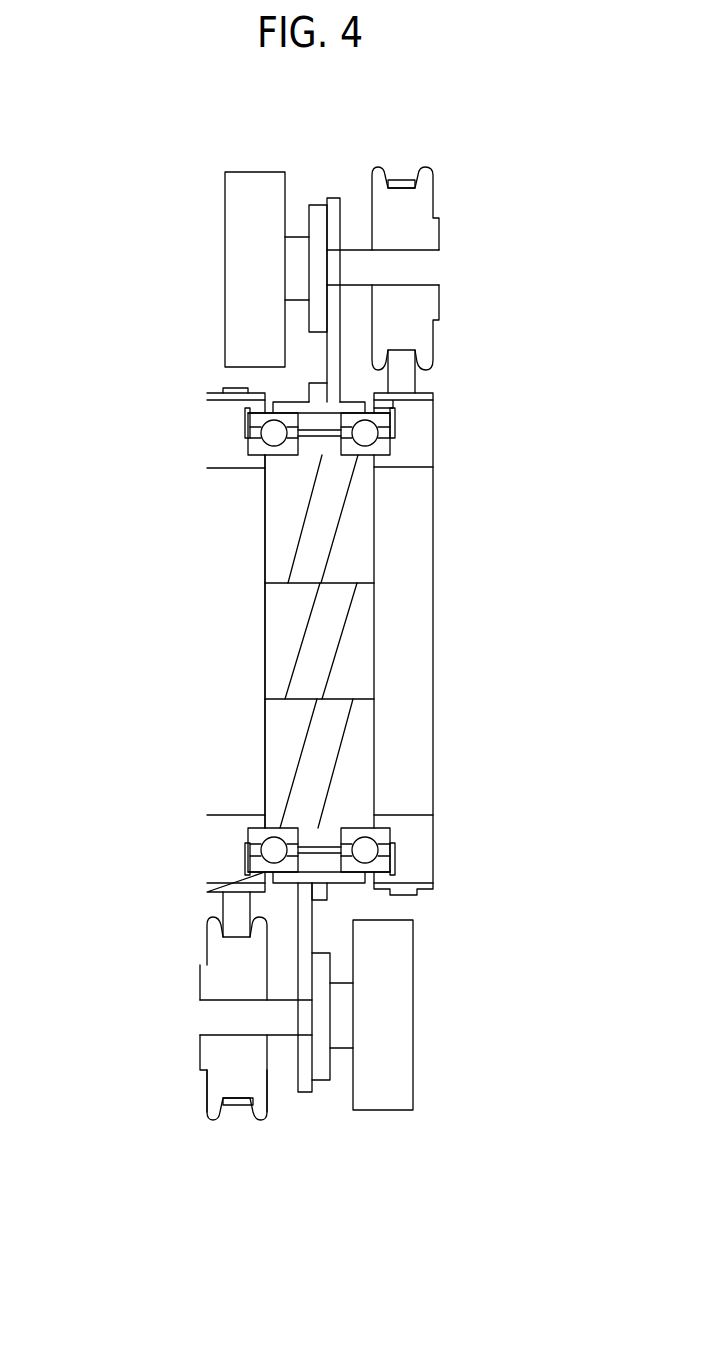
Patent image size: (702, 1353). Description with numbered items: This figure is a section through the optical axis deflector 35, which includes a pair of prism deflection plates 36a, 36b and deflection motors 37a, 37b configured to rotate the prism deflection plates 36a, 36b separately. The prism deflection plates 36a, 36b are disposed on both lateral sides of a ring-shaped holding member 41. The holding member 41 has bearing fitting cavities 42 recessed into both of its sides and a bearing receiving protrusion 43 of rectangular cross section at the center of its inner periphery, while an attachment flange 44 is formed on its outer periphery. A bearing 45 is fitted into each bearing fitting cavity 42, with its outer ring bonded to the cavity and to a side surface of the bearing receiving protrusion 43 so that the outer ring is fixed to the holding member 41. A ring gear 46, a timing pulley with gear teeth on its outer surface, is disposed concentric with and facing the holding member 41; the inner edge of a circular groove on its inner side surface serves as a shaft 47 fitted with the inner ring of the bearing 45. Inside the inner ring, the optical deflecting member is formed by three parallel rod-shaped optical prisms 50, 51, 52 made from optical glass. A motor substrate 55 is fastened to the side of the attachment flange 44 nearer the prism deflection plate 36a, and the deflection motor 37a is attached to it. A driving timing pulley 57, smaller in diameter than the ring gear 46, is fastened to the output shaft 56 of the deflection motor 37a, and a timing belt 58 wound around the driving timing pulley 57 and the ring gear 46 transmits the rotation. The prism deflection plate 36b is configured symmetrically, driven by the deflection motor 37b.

The optical axis deflector 35 is at (200, 346).
The prism deflection plate 36a is at (203, 412).
The prism deflection plate 36b is at (440, 408).
The deflection motor 37a is at (383, 1110).
The deflection motor 37b is at (258, 168).
The holding member 41 is at (327, 862).
The bearing fitting cavity 42 is at (348, 887).
The bearing receiving protrusion 43 is at (323, 853).
The attachment flange 44 is at (317, 900).
The bearing 45 is at (250, 447).
The ring gear 46 is at (207, 845).
The shaft 47 is at (265, 822).
The optical prism 50 is at (306, 522).
The optical prism 51 is at (312, 621).
The optical prism 52 is at (308, 735).
The motor substrate 55 is at (307, 1092).
The output shaft 56 is at (200, 1020).
The driving timing pulley 57 is at (203, 1090).
The timing belt 58 is at (223, 903).